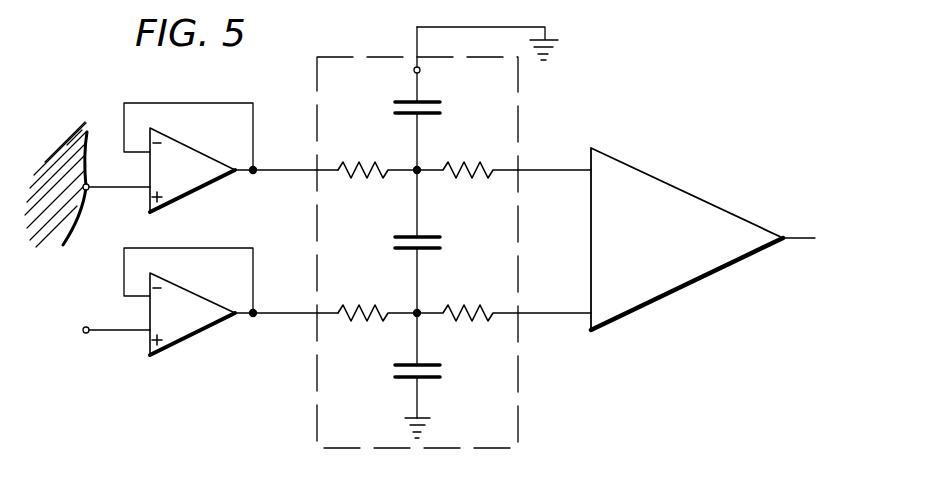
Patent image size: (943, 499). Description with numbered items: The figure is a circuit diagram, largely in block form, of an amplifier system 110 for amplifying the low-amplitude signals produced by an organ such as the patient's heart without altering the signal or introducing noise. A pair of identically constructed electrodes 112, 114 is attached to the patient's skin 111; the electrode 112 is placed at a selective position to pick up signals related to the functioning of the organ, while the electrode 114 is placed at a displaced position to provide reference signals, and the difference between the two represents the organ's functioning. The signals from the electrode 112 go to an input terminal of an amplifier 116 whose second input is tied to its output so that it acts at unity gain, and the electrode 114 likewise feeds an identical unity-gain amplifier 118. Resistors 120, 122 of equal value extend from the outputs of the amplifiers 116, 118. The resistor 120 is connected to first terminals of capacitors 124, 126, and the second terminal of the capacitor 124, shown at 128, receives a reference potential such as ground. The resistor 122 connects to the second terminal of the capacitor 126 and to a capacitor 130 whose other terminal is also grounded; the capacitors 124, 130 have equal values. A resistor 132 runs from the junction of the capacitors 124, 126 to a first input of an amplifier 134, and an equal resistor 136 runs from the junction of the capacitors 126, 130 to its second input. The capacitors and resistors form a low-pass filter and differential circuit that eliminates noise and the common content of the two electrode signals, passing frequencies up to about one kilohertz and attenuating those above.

The amplifier system 110 is at (533, 108).
The patient's skin 111 is at (85, 156).
The electrode 112 is at (87, 190).
The electrode 114 is at (87, 333).
The amplifier 116 is at (186, 192).
The amplifier 118 is at (186, 335).
The resistor 120 is at (384, 166).
The resistor 122 is at (385, 312).
The capacitor 124 is at (395, 107).
The capacitor 126 is at (430, 245).
The reference node 128 is at (413, 70).
The capacitor 130 is at (395, 372).
The resistor 132 is at (463, 166).
The amplifier 134 is at (687, 192).
The resistor 136 is at (463, 317).